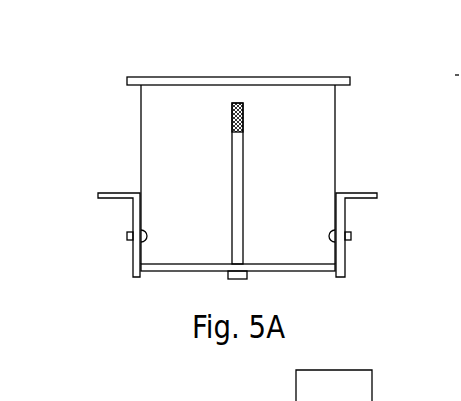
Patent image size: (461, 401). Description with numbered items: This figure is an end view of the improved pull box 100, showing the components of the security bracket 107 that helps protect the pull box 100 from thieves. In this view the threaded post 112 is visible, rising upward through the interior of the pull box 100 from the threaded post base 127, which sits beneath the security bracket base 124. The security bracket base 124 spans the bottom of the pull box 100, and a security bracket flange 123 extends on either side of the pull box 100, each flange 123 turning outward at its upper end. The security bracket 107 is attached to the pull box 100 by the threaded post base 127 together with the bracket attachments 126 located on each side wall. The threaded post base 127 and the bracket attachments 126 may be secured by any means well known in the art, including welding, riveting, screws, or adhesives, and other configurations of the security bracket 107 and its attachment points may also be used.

The pull box 100 is at (283, 61).
The security bracket 107 is at (114, 294).
The threaded post 112 is at (235, 153).
The security bracket flange 123 is at (125, 199).
The security bracket base 124 is at (177, 269).
The bracket attachment 126 is at (348, 233).
The threaded post base 127 is at (240, 273).